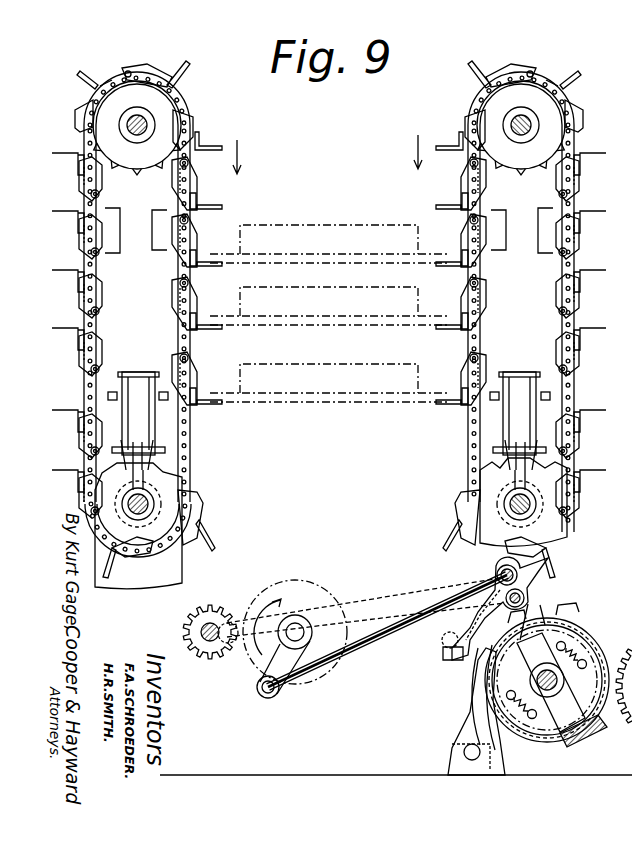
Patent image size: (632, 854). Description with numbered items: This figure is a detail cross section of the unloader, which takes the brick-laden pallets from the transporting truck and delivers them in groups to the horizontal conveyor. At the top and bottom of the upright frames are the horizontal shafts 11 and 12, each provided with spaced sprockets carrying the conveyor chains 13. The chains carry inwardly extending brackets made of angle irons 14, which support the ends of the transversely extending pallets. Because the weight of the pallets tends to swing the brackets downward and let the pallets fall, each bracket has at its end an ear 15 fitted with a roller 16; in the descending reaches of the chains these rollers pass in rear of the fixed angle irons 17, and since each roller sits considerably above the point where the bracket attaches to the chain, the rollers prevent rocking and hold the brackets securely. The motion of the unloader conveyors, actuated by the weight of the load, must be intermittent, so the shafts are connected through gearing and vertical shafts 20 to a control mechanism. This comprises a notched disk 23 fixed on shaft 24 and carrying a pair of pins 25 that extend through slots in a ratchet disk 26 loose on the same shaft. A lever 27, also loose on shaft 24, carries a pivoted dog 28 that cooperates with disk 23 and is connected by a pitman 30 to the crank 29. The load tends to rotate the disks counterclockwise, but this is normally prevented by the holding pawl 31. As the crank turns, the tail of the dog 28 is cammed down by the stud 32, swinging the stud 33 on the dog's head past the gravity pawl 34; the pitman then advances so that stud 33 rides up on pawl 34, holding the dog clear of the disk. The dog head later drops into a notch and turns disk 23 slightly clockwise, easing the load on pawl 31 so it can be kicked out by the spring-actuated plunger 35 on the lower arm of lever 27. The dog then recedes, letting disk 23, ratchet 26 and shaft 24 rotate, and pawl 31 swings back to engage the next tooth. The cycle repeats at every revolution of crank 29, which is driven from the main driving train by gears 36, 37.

The horizontal shaft 11 is at (150, 122).
The horizontal shaft 12 is at (150, 506).
The conveyor chain 13 is at (165, 97).
The angle iron bracket 14 is at (216, 428).
The ear 15 is at (196, 378).
The roller 16 is at (174, 358).
The angle iron 17 is at (190, 222).
The vertical shaft 20 is at (531, 296).
The notched disk 23 is at (472, 668).
The shaft 24 is at (540, 680).
The pin 25 is at (582, 648).
The ratchet disk 26 is at (560, 622).
The lever 27 is at (522, 602).
The dog 28 is at (536, 569).
The crank 29 is at (265, 698).
The pitman 30 is at (364, 652).
The holding pawl 31 is at (462, 736).
The stud 32 is at (505, 566).
The stud 33 is at (443, 651).
The gravity pawl 34 is at (455, 634).
The spring-actuated plunger 35 is at (626, 765).
The gear 36 is at (254, 600).
The gear 37 is at (188, 612).